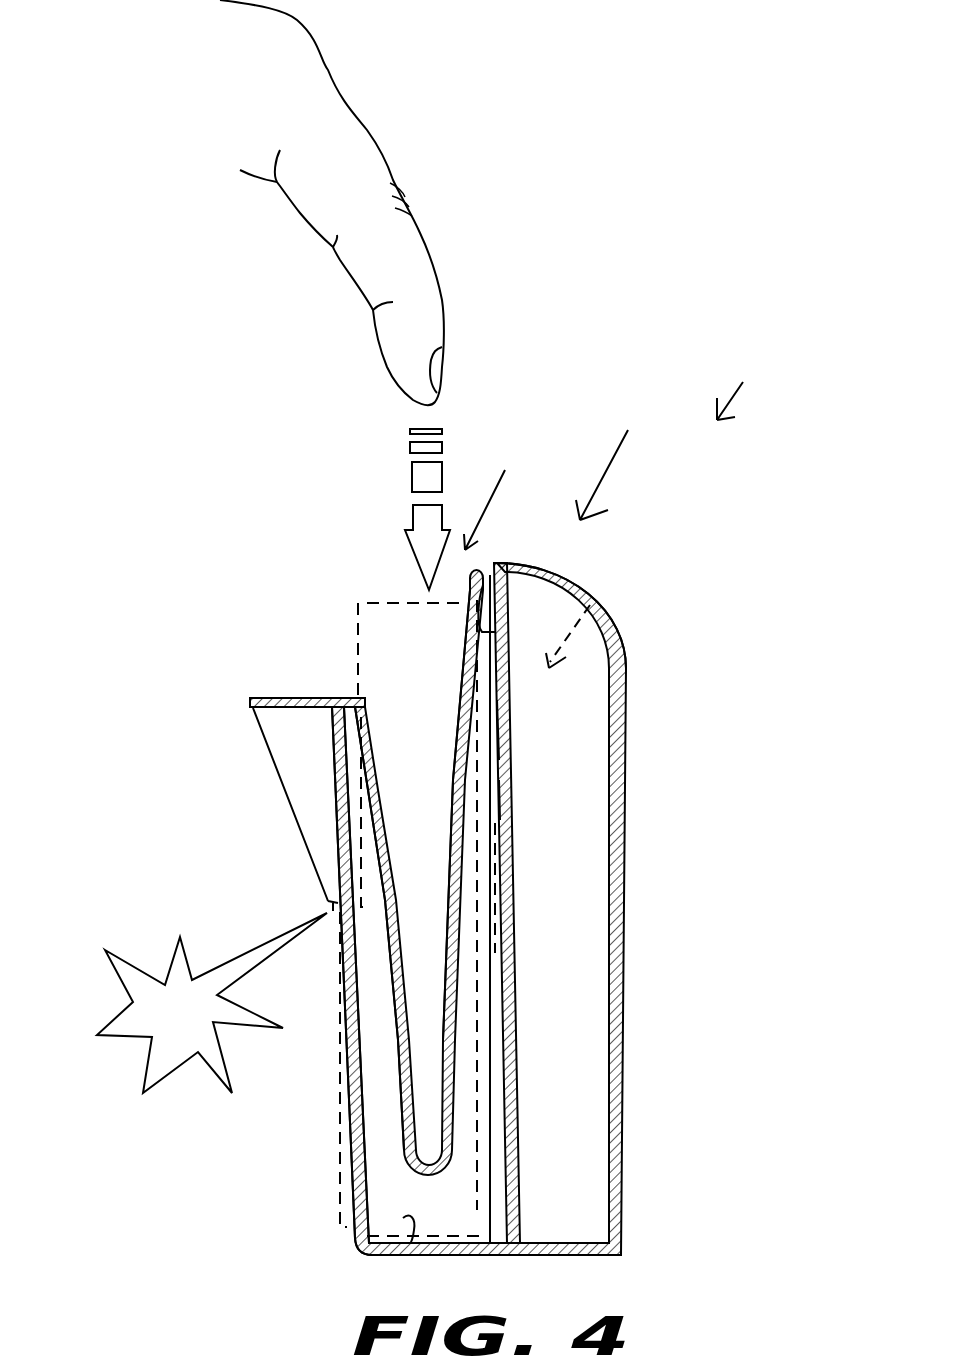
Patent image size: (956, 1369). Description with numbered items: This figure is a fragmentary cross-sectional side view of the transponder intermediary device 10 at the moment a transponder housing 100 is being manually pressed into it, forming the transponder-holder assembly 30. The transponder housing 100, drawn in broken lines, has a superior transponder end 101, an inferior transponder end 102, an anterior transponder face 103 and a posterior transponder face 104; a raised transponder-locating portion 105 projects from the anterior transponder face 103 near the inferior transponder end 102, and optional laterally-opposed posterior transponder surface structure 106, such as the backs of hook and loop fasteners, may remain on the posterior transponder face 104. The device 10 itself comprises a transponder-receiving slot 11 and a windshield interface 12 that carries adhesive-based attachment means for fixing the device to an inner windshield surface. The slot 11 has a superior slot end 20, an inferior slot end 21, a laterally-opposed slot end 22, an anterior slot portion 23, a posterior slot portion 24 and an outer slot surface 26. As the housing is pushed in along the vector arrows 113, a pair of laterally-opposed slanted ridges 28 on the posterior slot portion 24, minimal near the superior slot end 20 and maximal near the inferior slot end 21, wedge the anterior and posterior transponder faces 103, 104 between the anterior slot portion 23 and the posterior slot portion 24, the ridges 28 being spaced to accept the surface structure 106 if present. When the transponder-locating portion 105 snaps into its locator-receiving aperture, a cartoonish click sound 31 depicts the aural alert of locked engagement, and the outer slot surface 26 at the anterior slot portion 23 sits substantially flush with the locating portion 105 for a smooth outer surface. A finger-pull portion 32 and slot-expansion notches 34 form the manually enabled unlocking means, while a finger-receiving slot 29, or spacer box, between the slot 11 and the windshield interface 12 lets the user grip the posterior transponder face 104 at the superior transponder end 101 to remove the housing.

The transponder intermediary device 10 is at (616, 458).
The transponder-receiving slot 11 is at (495, 481).
The windshield interface 12 is at (625, 893).
The superior slot end 20 is at (422, 647).
The inferior slot end 21 is at (403, 1218).
The laterally-opposed slot end 22 is at (434, 1043).
The anterior slot portion 23 is at (330, 787).
The posterior slot portion 24 is at (499, 566).
The outer slot surface 26 is at (330, 860).
The slanted ridges 28 is at (497, 1214).
The finger-receiving slot 29 is at (598, 593).
The transponder-holder assembly 30 is at (749, 376).
The click sound 31 is at (130, 973).
The finger-pull portion 32 is at (268, 720).
The slot-expansion notches 34 is at (430, 1092).
The transponder housing 100 is at (300, 588).
The superior transponder end 101 is at (360, 615).
The inferior transponder end 102 is at (342, 1232).
The anterior transponder face 103 is at (357, 677).
The posterior transponder face 104 is at (478, 752).
The transponder-locating portion 105 is at (340, 1103).
The posterior transponder surface structure 106 is at (480, 805).
The vector arrows 113 is at (425, 483).